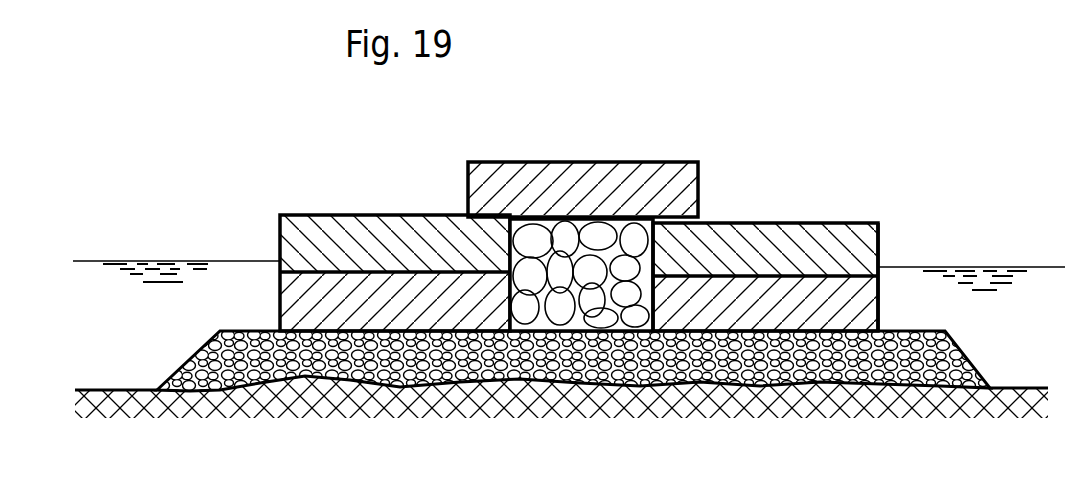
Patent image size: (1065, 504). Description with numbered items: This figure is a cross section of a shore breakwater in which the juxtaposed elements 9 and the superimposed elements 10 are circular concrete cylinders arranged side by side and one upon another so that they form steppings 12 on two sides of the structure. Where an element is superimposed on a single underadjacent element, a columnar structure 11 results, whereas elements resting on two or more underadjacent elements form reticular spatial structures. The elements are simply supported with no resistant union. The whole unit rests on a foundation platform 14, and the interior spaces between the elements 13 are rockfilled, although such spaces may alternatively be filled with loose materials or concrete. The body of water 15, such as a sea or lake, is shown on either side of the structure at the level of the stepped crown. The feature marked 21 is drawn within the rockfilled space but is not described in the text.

The juxtaposed elements 9 is at (560, 162).
The superimposed elements 10 is at (738, 297).
The columnar structures 11 is at (838, 273).
The steppings 12 is at (354, 215).
The spaces between the elements 13 is at (560, 318).
The foundation platform 14 is at (420, 365).
The body of water 15 is at (163, 278).
The stone 21 is at (613, 300).